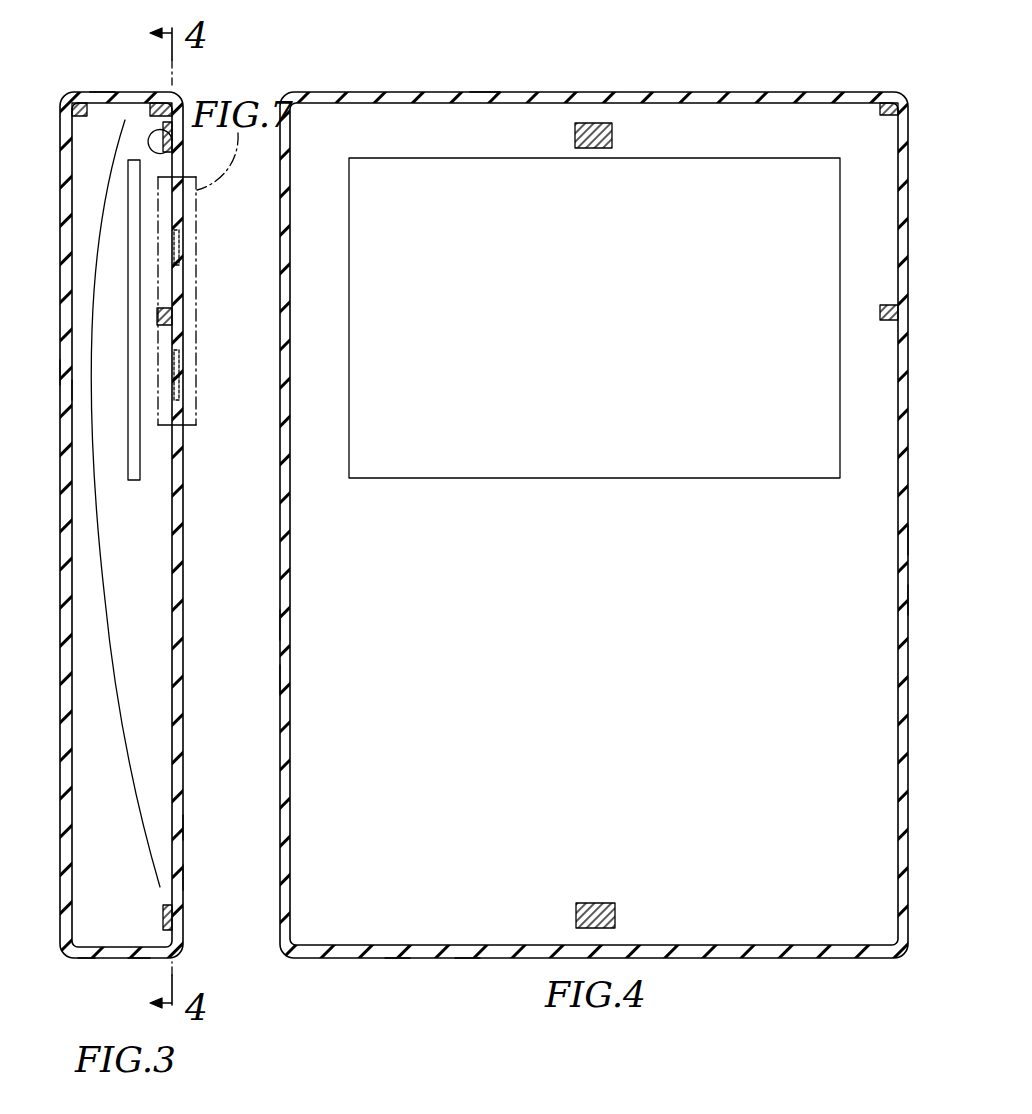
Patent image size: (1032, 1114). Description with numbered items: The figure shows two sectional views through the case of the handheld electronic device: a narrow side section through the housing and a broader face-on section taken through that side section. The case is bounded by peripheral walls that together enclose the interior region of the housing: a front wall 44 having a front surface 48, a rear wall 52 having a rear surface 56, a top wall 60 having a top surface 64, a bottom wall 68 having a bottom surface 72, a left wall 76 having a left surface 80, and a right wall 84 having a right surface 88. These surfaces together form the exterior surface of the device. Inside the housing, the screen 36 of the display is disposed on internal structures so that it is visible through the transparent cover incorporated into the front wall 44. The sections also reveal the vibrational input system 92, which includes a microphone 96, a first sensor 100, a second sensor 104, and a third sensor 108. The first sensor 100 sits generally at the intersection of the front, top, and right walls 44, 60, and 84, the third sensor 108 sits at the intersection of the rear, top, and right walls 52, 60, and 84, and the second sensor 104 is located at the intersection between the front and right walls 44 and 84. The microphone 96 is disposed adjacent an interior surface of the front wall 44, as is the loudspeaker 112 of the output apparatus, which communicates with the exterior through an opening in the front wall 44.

In FIG. 3, the screen 36 is at (128, 440).
In FIG. 4, the screen 36 is at (572, 478).
In FIG. 3, the front wall 44 is at (183, 830).
In FIG. 3, the front surface 48 is at (183, 882).
In FIG. 3, the rear wall 52 is at (60, 374).
In FIG. 3, the rear surface 56 is at (60, 390).
In FIG. 3, the top wall 60 is at (74, 92).
In FIG. 4, the top wall 60 is at (393, 92).
In FIG. 3, the top surface 64 is at (100, 92).
In FIG. 4, the top surface 64 is at (482, 92).
In FIG. 3, the bottom wall 68 is at (88, 958).
In FIG. 4, the bottom wall 68 is at (400, 958).
In FIG. 3, the bottom surface 72 is at (140, 958).
In FIG. 4, the bottom surface 72 is at (470, 958).
In FIG. 4, the left wall 76 is at (280, 628).
In FIG. 4, the left surface 80 is at (280, 686).
In FIG. 4, the right wall 84 is at (908, 550).
In FIG. 4, the right surface 88 is at (908, 616).
In FIG. 3, the vibrational input system 92 is at (152, 308).
In FIG. 3, the microphone 96 is at (163, 910).
In FIG. 4, the microphone 96 is at (615, 908).
In FIG. 3, the first sensor 100 is at (152, 103).
In FIG. 4, the first sensor 100 is at (880, 108).
In FIG. 3, the second sensor 104 is at (160, 300).
In FIG. 4, the second sensor 104 is at (880, 312).
In FIG. 3, the third sensor 108 is at (80, 116).
In FIG. 3, the loudspeaker 112 is at (172, 160).
In FIG. 4, the loudspeaker 112 is at (612, 135).